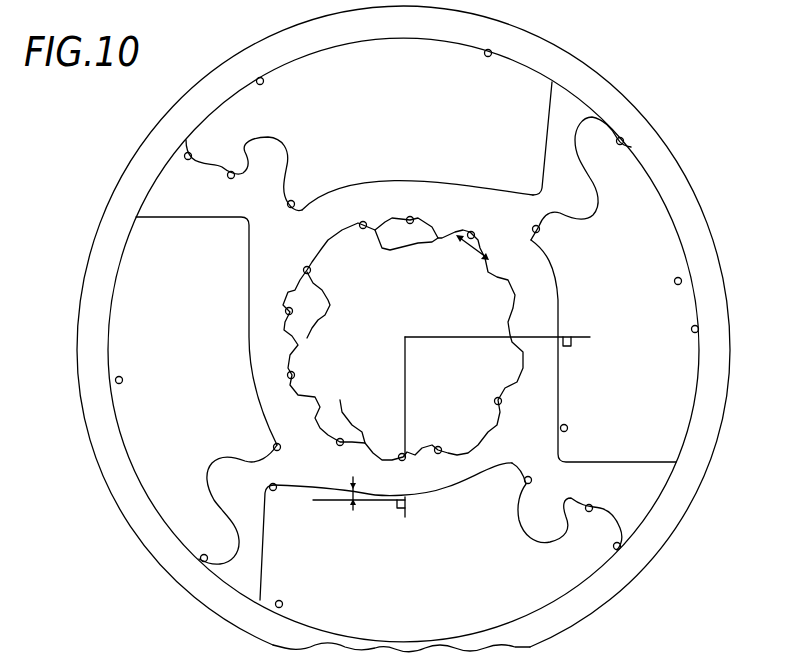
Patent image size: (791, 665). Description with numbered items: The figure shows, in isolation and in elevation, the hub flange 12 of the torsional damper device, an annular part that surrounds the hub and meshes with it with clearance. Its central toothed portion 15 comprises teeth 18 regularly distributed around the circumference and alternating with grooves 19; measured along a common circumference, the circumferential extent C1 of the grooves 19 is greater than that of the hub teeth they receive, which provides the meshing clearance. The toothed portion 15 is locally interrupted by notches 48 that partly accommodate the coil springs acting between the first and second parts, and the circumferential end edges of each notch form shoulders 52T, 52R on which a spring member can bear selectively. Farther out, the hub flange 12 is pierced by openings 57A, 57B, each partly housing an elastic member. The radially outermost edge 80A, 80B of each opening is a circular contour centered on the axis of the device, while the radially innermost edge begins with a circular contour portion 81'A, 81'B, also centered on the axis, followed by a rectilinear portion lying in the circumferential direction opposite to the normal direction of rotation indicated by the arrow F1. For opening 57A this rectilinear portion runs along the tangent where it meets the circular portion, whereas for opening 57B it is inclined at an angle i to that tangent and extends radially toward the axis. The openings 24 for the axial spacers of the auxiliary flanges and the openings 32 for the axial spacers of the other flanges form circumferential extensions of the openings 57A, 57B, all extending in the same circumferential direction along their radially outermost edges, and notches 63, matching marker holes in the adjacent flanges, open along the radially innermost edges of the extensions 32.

The hub flange 12 is at (638, 98).
The openings 32 is at (185, 159).
The notches 63 is at (228, 178).
The holes 24 is at (288, 211).
The notches 48 is at (319, 204).
The teeth 18 is at (382, 248).
The grooves 19 is at (412, 218).
The shoulder 52T is at (363, 221).
The shoulder 52R is at (303, 268).
The toothed portion 15 is at (477, 284).
The circumferential extent C1 is at (485, 258).
The opening 57A is at (676, 276).
The opening 57B is at (257, 83).
The radially outermost peripheral edge 80A is at (698, 329).
The radially outermost peripheral edge 80B is at (492, 52).
The circular contour portion 81'A is at (511, 303).
The circular contour portion 81'B is at (460, 449).
The arrow F1 is at (122, 96).
The angle i is at (352, 517).